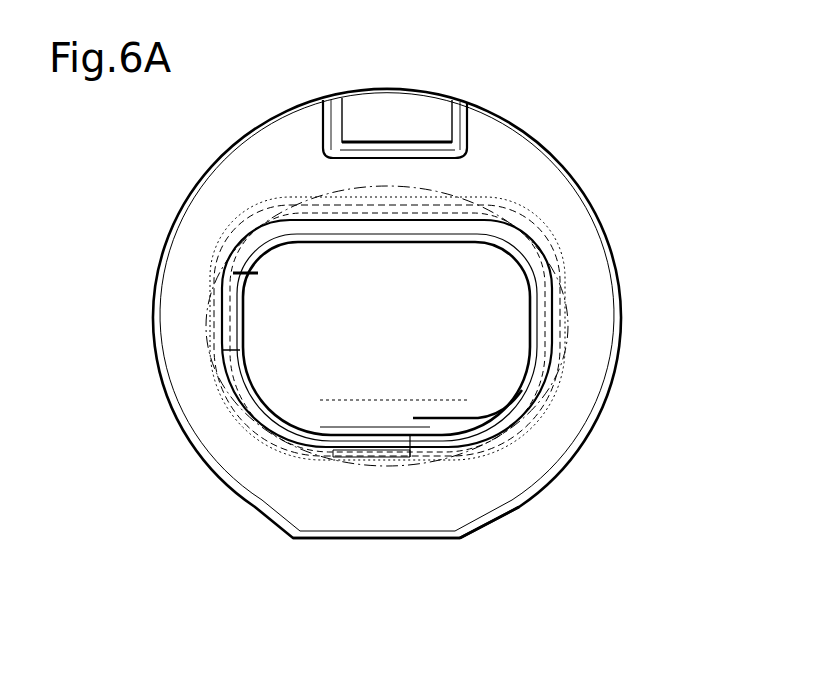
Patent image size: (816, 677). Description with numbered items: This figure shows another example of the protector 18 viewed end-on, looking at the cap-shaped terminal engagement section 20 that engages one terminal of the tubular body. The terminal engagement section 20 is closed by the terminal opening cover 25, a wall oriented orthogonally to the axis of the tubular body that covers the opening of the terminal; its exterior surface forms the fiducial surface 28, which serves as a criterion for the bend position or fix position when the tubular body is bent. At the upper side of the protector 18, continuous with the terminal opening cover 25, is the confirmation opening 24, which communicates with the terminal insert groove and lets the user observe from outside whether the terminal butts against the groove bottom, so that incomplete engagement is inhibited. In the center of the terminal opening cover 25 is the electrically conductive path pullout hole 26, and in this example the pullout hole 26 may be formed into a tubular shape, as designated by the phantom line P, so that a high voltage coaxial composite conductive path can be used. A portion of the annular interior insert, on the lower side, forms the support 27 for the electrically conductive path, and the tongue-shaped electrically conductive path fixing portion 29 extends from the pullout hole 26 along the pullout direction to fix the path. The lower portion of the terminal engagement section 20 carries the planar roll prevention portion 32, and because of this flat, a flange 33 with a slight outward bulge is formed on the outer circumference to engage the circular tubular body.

The protector 18 is at (579, 140).
The terminal engagement section 20 is at (567, 242).
The confirmation opening 24 is at (389, 112).
The terminal opening cover 25 is at (208, 227).
The electrically conductive path pullout hole 26 is at (468, 250).
The support 27 is at (480, 395).
The fiducial surface 28 is at (183, 308).
The electrically conductive path fixing portion 29 is at (250, 393).
The roll prevention portion 32 is at (402, 540).
The flange 33 is at (530, 500).
The phantom line P is at (367, 470).